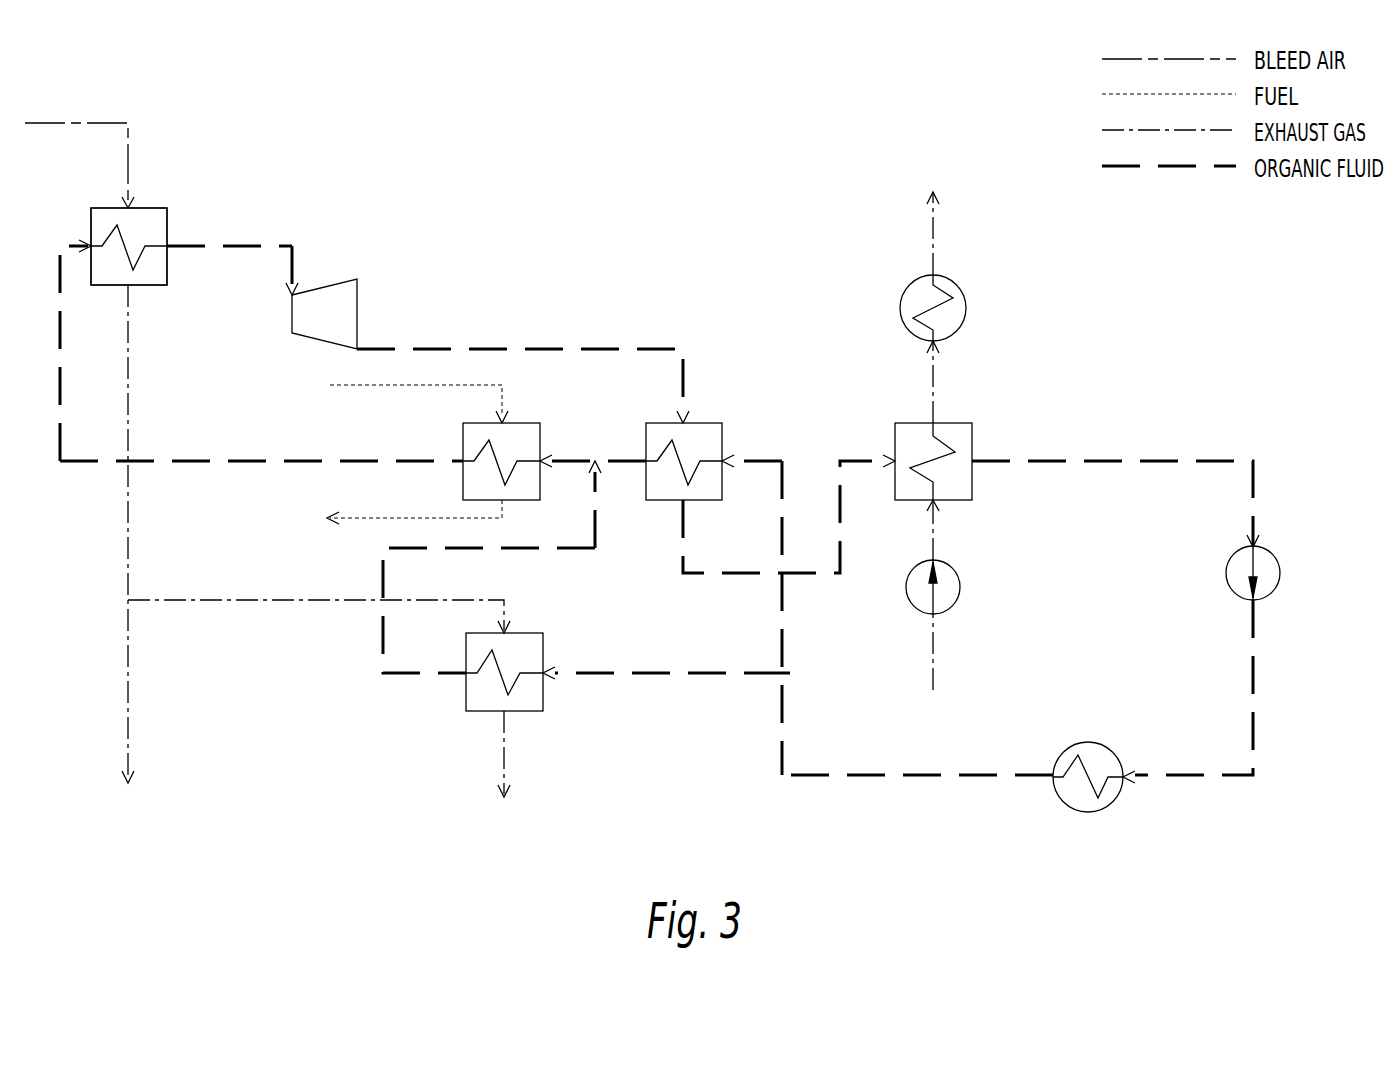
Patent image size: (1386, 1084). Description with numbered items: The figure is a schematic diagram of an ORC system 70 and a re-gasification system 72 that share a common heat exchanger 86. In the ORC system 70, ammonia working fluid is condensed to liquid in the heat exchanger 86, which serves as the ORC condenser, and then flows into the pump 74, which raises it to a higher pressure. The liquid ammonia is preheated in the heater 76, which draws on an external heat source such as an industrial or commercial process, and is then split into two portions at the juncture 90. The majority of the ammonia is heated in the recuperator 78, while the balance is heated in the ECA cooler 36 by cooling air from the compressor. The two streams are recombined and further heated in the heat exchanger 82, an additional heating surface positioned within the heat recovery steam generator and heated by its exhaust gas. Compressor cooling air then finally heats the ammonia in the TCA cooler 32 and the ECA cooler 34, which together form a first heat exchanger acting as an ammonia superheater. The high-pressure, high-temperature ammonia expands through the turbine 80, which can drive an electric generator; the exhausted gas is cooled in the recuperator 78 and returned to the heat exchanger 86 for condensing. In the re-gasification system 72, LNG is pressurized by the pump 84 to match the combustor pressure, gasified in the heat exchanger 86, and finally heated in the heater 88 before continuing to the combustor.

The TCA cooler 32 is at (167, 215).
The ECA cooler 34 is at (152, 246).
The ECA cooler 36 is at (533, 633).
The ORC system 70 is at (733, 372).
The re-gasification system 72 is at (1027, 377).
The pump 74 is at (1280, 560).
The heater 76 is at (1108, 745).
The recuperator 78 is at (712, 423).
The turbine 80 is at (358, 285).
The heat exchanger 82 is at (528, 423).
The pump 84 is at (960, 575).
The heat exchanger 86 is at (960, 423).
The heater 88 is at (960, 292).
The juncture 90 is at (784, 672).